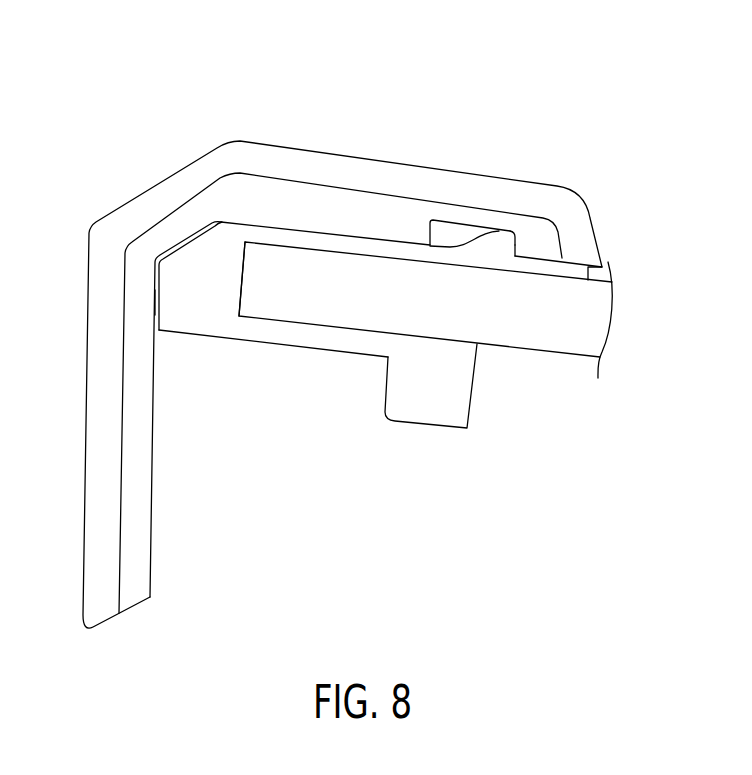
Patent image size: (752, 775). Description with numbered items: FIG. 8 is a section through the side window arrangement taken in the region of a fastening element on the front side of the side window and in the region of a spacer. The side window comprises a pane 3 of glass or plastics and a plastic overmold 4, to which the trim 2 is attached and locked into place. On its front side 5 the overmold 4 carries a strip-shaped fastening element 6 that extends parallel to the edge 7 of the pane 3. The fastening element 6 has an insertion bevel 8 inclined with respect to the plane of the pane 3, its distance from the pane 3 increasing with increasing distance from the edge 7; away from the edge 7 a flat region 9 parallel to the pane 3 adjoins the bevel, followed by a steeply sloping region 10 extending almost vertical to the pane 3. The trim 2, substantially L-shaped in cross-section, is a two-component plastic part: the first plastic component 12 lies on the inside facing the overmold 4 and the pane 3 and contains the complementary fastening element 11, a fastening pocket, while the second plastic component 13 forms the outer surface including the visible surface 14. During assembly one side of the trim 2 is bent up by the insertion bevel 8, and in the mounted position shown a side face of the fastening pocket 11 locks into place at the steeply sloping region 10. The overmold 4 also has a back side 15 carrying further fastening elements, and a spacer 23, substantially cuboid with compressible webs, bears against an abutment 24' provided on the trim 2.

The trim 2 is at (90, 63).
The pane 3 is at (556, 337).
The overmold 4 is at (267, 328).
The front side 5 is at (320, 230).
The fastening element 6 is at (487, 247).
The edge 7 is at (240, 296).
The insertion bevel 8 is at (458, 237).
The flat region 9 is at (510, 231).
The steeply sloping region 10 is at (518, 252).
The fastening element 11 is at (438, 227).
The first plastic component 12 is at (138, 477).
The second plastic component 13 is at (107, 438).
The visible surface 14 is at (557, 187).
The back side 15 is at (332, 350).
The spacer 23 is at (175, 280).
The abutment 24' is at (101, 327).